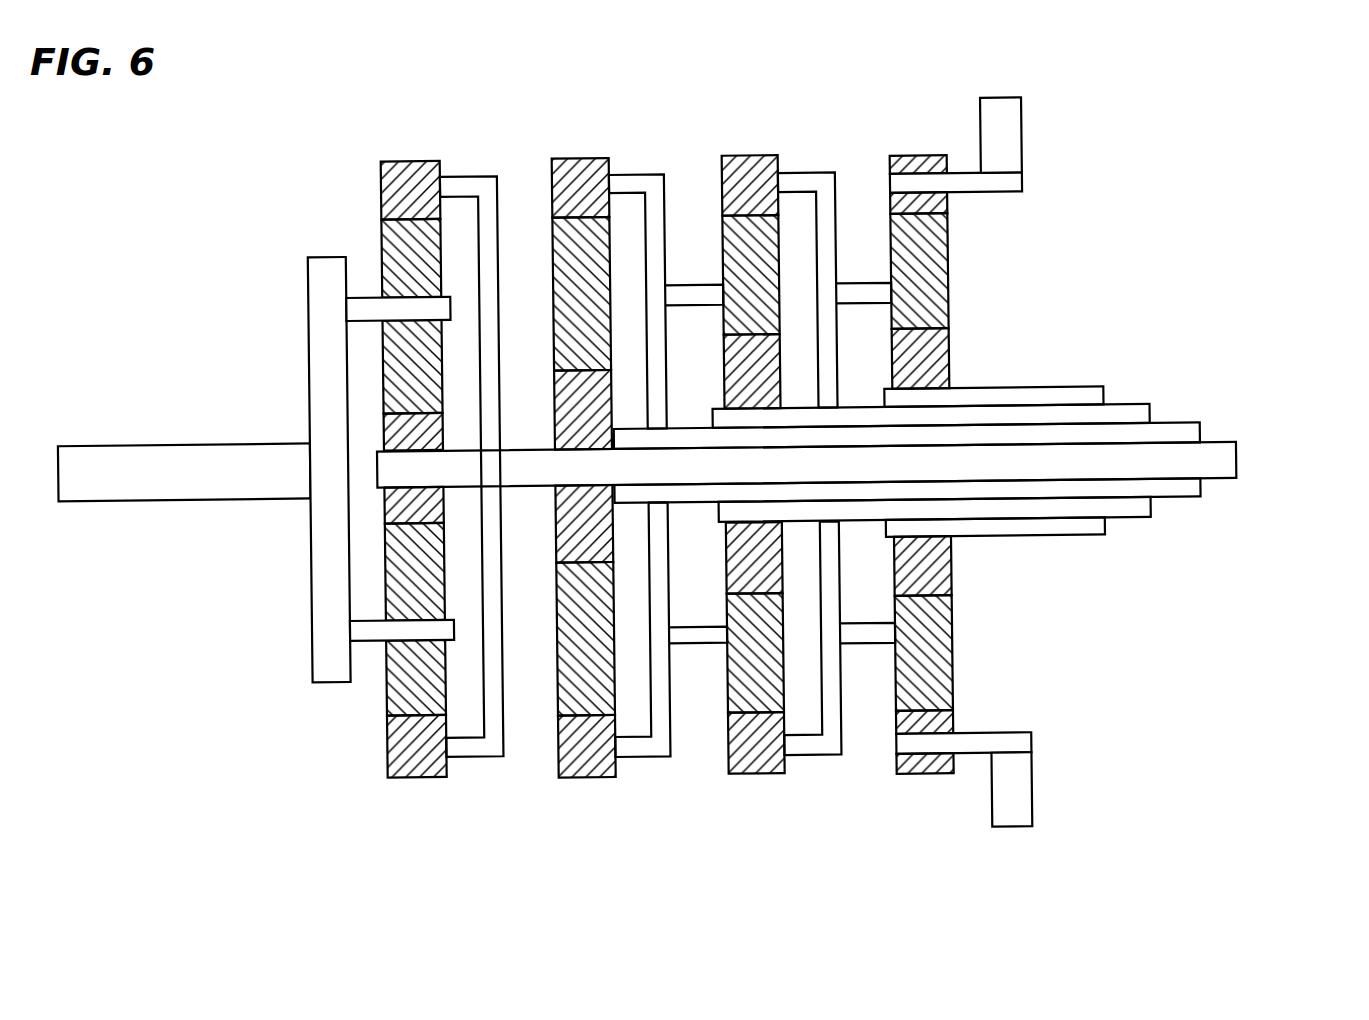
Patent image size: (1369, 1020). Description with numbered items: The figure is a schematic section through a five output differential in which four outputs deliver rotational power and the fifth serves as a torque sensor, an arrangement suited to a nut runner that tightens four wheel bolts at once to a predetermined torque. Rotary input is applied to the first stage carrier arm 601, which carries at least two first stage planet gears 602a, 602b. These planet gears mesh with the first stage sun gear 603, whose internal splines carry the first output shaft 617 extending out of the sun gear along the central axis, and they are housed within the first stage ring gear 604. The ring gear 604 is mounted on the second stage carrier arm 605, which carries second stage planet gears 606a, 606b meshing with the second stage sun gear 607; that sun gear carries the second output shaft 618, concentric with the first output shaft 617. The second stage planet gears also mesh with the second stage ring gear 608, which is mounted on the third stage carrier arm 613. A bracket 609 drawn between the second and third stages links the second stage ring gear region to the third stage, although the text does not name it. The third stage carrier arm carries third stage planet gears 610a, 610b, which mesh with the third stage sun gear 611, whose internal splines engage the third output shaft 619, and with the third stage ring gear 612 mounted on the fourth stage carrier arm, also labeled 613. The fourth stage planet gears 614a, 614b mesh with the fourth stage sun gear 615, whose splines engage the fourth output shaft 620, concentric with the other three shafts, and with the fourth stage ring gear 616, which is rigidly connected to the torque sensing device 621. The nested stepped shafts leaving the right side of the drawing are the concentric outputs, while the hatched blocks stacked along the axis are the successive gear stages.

The first stage carrier arm 601 is at (326, 351).
The first stage planet gear 602a is at (400, 237).
The first stage planet gear 602b is at (389, 691).
The first stage sun gear 603 is at (371, 501).
The first stage ring gear 604 is at (399, 164).
The second stage carrier arm 605 is at (462, 187).
The second stage planet gear 606a is at (602, 234).
The second stage planet gear 606b is at (612, 689).
The second stage sun gear 607 is at (568, 521).
The second stage ring gear 608 is at (584, 166).
The second yoke bracket 609 is at (659, 200).
The third stage planet gear 610a is at (771, 241).
The third stage planet gear 610b is at (769, 684).
The third stage sun gear 611 is at (770, 375).
The third stage ring gear 612 is at (750, 753).
The third stage carrier arm 613 is at (840, 737).
The fourth stage planet gear 614a is at (932, 273).
The fourth stage planet gear 614b is at (932, 671).
The fourth stage sun gear 615 is at (929, 558).
The fourth stage ring gear 616 is at (919, 168).
The first output shaft 617 is at (1215, 461).
The second output shaft 618 is at (1189, 499).
The third output shaft 619 is at (1129, 515).
The fourth output shaft 620 is at (1076, 529).
The torque sensing device 621 is at (1014, 142).